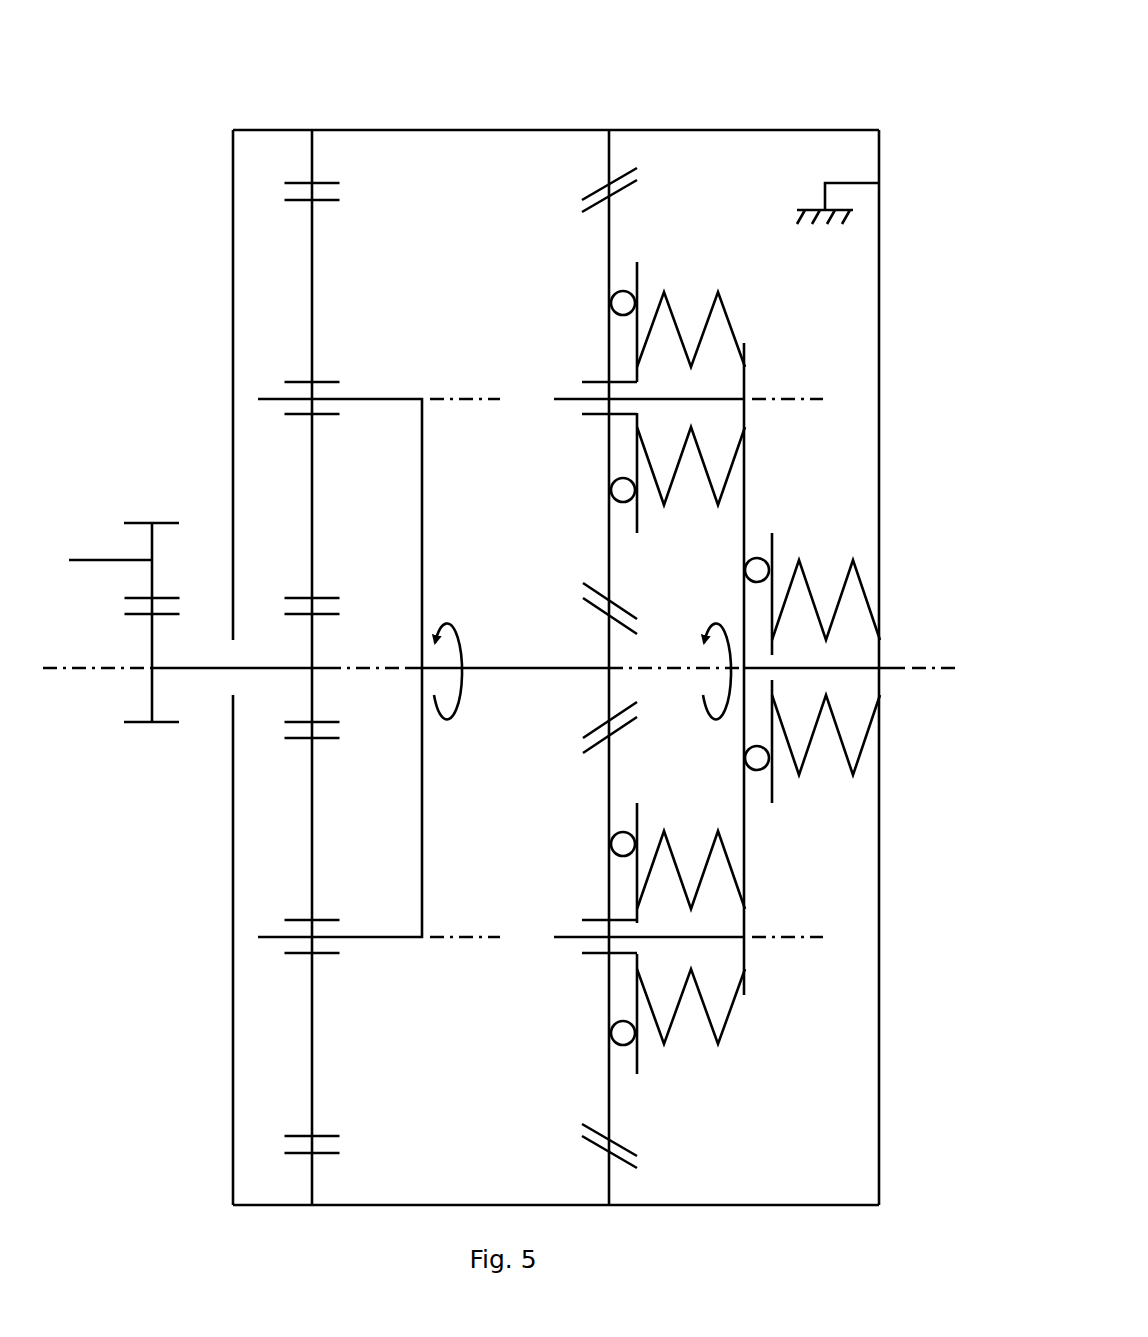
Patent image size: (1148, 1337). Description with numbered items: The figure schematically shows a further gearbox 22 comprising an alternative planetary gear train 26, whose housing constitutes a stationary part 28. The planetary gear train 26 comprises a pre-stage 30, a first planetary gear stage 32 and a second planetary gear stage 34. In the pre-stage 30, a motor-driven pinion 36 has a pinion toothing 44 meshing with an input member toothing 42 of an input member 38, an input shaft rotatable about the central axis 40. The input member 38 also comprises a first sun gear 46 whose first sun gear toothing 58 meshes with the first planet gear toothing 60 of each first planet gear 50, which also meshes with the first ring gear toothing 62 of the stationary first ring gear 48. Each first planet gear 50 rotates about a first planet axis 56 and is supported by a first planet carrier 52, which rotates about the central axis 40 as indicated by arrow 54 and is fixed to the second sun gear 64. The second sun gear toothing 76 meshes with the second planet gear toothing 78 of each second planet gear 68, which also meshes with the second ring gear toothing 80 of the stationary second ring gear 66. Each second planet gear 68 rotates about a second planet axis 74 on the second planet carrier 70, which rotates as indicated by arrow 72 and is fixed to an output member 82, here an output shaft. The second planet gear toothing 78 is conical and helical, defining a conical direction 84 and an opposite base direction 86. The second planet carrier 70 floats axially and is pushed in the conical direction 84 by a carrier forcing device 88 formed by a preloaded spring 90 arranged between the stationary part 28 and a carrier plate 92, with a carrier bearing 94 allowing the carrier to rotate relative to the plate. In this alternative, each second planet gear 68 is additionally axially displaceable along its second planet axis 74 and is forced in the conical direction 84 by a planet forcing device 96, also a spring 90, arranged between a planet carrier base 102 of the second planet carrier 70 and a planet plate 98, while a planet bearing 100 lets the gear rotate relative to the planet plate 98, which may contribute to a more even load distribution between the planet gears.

The gearbox 22 is at (233, 225).
The planetary gear train 26 is at (181, 86).
The stationary part 28 is at (880, 225).
The pre-stage 30 is at (124, 430).
The first planetary gear stage 32 is at (369, 107).
The second planetary gear stage 34 is at (694, 107).
The pinion 36 is at (96, 559).
The input member 38 is at (215, 662).
The central axis 40 is at (62, 676).
The input member toothing 42 is at (168, 727).
The pinion toothing 44 is at (160, 521).
The first sun gear 46 is at (312, 630).
The first ring gear 48 is at (312, 150).
The first planet gears 50 is at (312, 280).
The first planet carrier 52 is at (422, 465).
The arrow 54 is at (447, 688).
The first planet axis 56 is at (462, 404).
The first sun gear toothing 58 is at (325, 614).
The first planet gear toothing 60 is at (325, 200).
The first ring gear toothing 62 is at (325, 183).
The second sun gear 64 is at (609, 640).
The second ring gear 66 is at (612, 158).
The second planet gears 68 is at (609, 297).
The second planet carrier 70 is at (745, 870).
The arrow 72 is at (715, 688).
The second planet axis 74 is at (782, 404).
The second sun gear toothing 76 is at (590, 602).
The second planet gear toothing 78 is at (625, 192).
The second ring gear toothing 80 is at (598, 190).
The output member 82 is at (895, 665).
The conical direction 84 is at (528, 372).
The base direction 86 is at (447, 318).
The carrier forcing device 88 is at (843, 538).
The spring 90 is at (683, 475).
The carrier plate 92 is at (772, 540).
The carrier bearing 94 is at (757, 775).
The planet forcing devices 96 is at (733, 281).
The planet plate 98 is at (640, 280).
The planet bearing 100 is at (628, 505).
The planet carrier base 102 is at (740, 553).